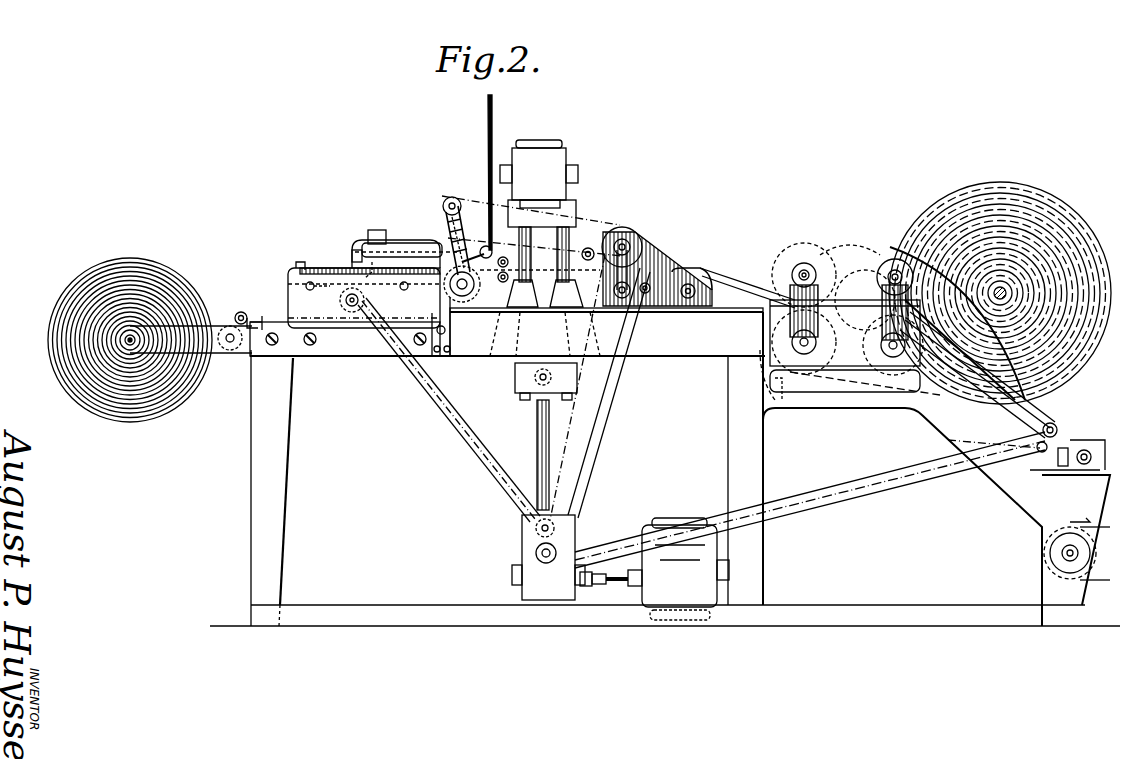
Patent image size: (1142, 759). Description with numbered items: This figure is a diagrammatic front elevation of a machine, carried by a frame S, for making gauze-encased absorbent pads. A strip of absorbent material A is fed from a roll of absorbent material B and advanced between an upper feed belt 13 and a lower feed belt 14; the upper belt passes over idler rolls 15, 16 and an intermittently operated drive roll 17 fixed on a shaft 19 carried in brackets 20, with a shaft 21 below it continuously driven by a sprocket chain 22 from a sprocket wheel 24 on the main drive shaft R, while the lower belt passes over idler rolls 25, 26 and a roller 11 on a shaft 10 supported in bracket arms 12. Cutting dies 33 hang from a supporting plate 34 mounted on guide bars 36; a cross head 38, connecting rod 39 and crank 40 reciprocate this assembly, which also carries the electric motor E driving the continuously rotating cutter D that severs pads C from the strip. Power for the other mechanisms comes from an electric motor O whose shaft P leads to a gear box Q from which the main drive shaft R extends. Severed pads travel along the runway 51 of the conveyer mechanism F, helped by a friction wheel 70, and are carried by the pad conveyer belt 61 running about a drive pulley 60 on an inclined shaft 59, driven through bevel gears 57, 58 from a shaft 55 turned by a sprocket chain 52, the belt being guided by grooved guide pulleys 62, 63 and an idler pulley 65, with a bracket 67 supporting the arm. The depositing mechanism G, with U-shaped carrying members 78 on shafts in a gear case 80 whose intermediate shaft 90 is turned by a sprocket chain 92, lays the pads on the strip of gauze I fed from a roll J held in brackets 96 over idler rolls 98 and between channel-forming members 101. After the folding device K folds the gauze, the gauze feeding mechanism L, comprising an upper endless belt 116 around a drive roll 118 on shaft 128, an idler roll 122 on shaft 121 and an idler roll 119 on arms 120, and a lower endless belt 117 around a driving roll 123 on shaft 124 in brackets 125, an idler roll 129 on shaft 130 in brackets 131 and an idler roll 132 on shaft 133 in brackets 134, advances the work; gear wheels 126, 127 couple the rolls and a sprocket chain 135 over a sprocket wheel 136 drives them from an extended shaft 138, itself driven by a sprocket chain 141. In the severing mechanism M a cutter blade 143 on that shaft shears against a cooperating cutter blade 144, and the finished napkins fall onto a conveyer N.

The frame S is at (252, 494).
The roll J is at (60, 290).
The brackets 96 is at (168, 335).
The idler rolls 98 is at (233, 345).
The strip of gauze I is at (246, 305).
The channel-forming members 101 is at (268, 316).
The gear case 80 is at (318, 332).
The depositing mechanism G is at (268, 318).
The pads C is at (330, 268).
The runway 51 is at (300, 268).
The U-shaped carrying members 78 is at (358, 294).
The intermediate shaft 90 is at (352, 312).
The grooved guide pulleys 62 is at (380, 280).
The sprocket chain 92 is at (458, 430).
The bracket 67 is at (440, 342).
The friction wheel 70 is at (464, 300).
The conveyer mechanism F is at (440, 200).
The grooved guide pulleys 63 is at (356, 250).
The idler pulley 65 is at (380, 232).
The pad conveyer belt 61 is at (410, 248).
The shaft 55 is at (452, 205).
The bevel gear 57 is at (445, 202).
The bevel gear 58 is at (448, 215).
The inclined shaft 59 is at (448, 228).
The sprocket chain 52 is at (472, 198).
The drive pulley 60 is at (480, 250).
The idler roll 26 is at (486, 290).
The idler roll 16 is at (540, 260).
The rotary cutter D is at (486, 108).
The electric motor E is at (542, 150).
The supporting plate 34 is at (578, 205).
The cutting dies 33 is at (542, 213).
The upper feed belt 13 is at (544, 254).
The lower feed belt 14 is at (545, 293).
The guide bars 36 is at (545, 334).
The idler roll 15 is at (588, 246).
The brackets 20 is at (610, 232).
The drive roll 17 is at (628, 240).
The shaft 19 is at (640, 240).
The bracket arms 12 is at (668, 262).
The strip of absorbent material A is at (708, 270).
The shaft 10 is at (695, 296).
The shaft 21 is at (628, 298).
The idler roll 25 is at (645, 296).
The folding device K is at (652, 318).
The roller 11 is at (722, 285).
The gauze feeding mechanism L is at (820, 230).
The drive roll 118 is at (805, 258).
The shaft 128 is at (800, 285).
The sprocket wheel 136 is at (790, 282).
The gear wheel 127 is at (806, 240).
The sprocket chain 135 is at (820, 262).
The idler roll 122 is at (890, 262).
The upper endless belt 116 is at (879, 313).
The lower endless belt 117 is at (840, 378).
The roll of absorbent material B is at (992, 190).
The arms 120 is at (950, 240).
The shaft 121 is at (893, 262).
The idler roll 119 is at (1058, 424).
The severing mechanism M is at (1094, 452).
The idler roll 129 is at (1000, 440).
The shaft 130 is at (1010, 455).
The brackets 131 is at (1045, 450).
The shaft 133 is at (900, 380).
The brackets 134 is at (880, 372).
The idler roll 132 is at (918, 410).
The brackets 125 is at (800, 400).
The gear wheel 126 is at (773, 432).
The driving roll 123 is at (795, 325).
The shaft 124 is at (790, 345).
The cutter blade 143 is at (1085, 468).
The cooperating cutter blade 144 is at (1052, 470).
The extended shaft 138 is at (1085, 468).
The conveyer N is at (1022, 540).
The sprocket chain 141 is at (862, 490).
The cross head 38 is at (516, 380).
The connecting rod 39 is at (538, 429).
The crank 40 is at (560, 525).
The gear box Q is at (520, 553).
The main drive shaft R is at (535, 562).
The sprocket wheel 24 is at (547, 565).
The sprocket chain 22 is at (580, 430).
The electric motor O is at (685, 525).
The shaft P is at (614, 585).